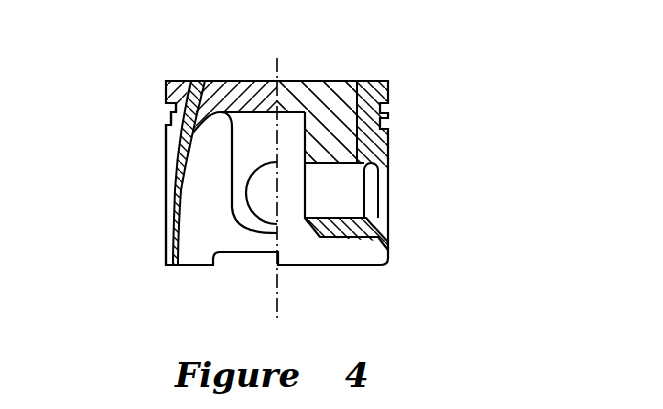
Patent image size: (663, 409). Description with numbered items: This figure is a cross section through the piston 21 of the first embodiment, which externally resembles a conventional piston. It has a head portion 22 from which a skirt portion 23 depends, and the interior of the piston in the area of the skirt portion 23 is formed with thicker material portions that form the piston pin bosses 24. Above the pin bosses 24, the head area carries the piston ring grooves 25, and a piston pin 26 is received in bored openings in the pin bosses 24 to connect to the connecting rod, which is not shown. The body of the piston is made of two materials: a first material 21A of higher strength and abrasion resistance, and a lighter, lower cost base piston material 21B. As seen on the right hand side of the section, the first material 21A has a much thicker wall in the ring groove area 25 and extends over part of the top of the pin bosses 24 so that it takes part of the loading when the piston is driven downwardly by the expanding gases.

The piston 21 is at (412, 60).
The first material 21A is at (388, 90).
The base piston material 21B is at (342, 96).
The head portion 22 is at (292, 81).
The skirt portion 23 is at (168, 183).
The piston pin bosses 24 is at (240, 150).
The piston ring grooves 25 is at (169, 125).
The piston pin 26 is at (350, 191).